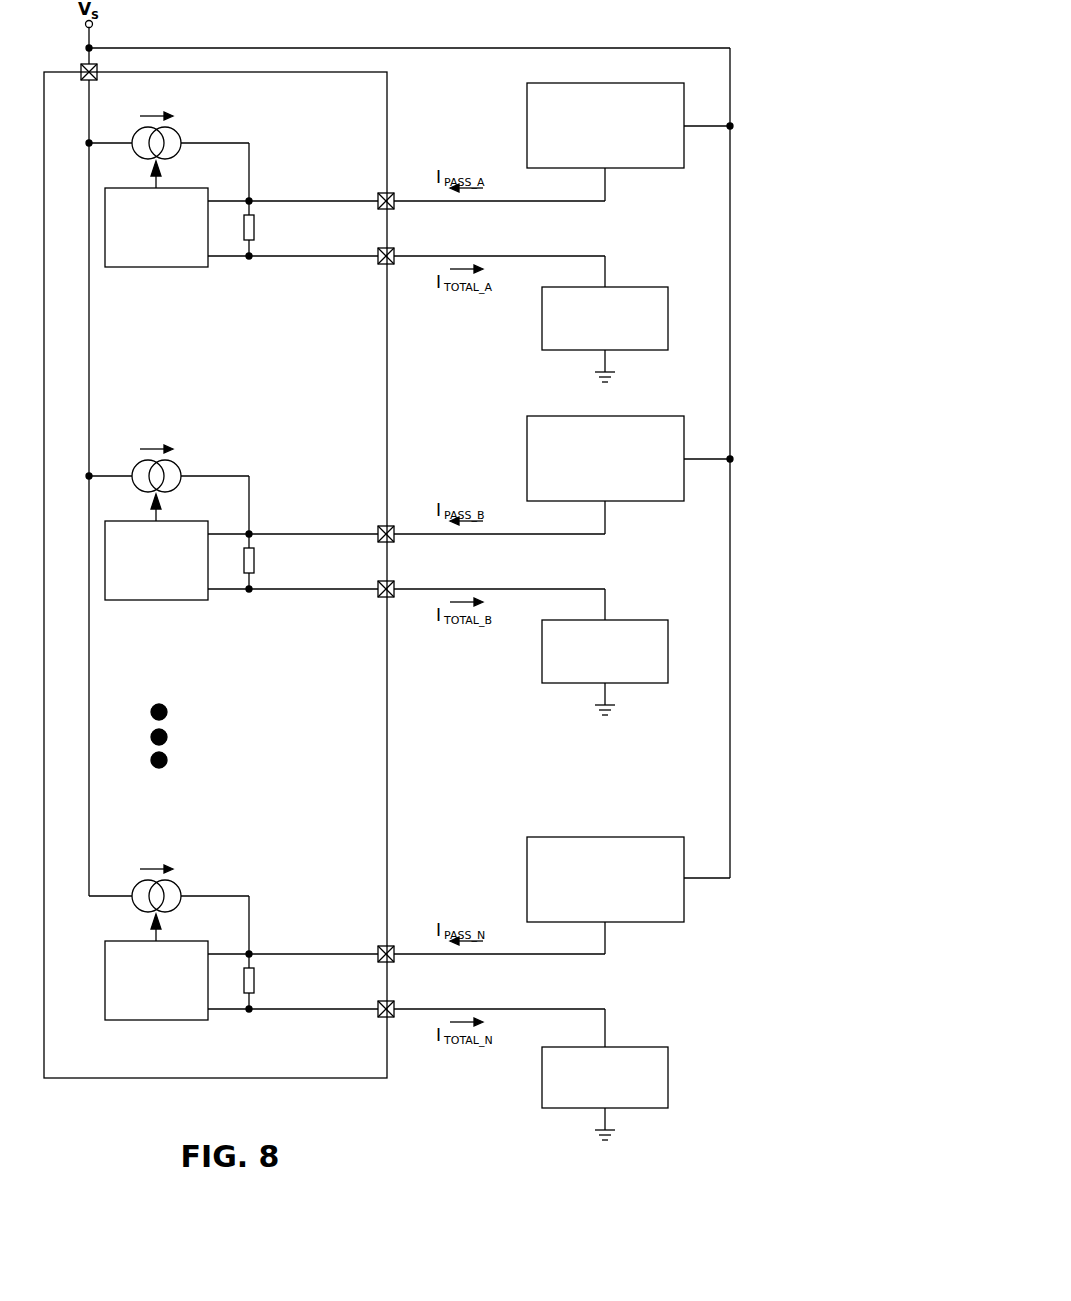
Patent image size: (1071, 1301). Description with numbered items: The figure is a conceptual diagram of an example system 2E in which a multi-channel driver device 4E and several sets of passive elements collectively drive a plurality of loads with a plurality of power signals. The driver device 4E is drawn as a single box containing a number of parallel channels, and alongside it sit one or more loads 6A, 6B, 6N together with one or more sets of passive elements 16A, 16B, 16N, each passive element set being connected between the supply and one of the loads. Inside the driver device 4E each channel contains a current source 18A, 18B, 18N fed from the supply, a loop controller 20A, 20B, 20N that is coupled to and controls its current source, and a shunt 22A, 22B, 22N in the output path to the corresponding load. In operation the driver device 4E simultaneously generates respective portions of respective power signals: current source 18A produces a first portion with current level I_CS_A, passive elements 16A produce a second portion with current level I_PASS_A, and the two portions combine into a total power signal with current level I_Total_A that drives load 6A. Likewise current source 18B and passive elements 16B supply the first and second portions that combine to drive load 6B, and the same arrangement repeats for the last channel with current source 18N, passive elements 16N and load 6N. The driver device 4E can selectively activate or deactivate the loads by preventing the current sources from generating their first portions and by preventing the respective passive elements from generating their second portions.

The system 2E is at (776, 40).
The driver device 4E is at (270, 1070).
The load 6A is at (594, 340).
The load 6B is at (594, 673).
The load 6N is at (594, 1099).
The passive elements 16A is at (589, 159).
The passive elements 16B is at (589, 492).
The passive elements 16N is at (589, 913).
The current source 18A is at (183, 136).
The current source 18B is at (183, 469).
The current source 18N is at (183, 889).
The loop controller 20A is at (139, 250).
The loop controller 20B is at (139, 583).
The loop controller 20N is at (139, 1003).
The shunt 22A is at (257, 229).
The shunt 22B is at (257, 562).
The shunt 22N is at (257, 982).